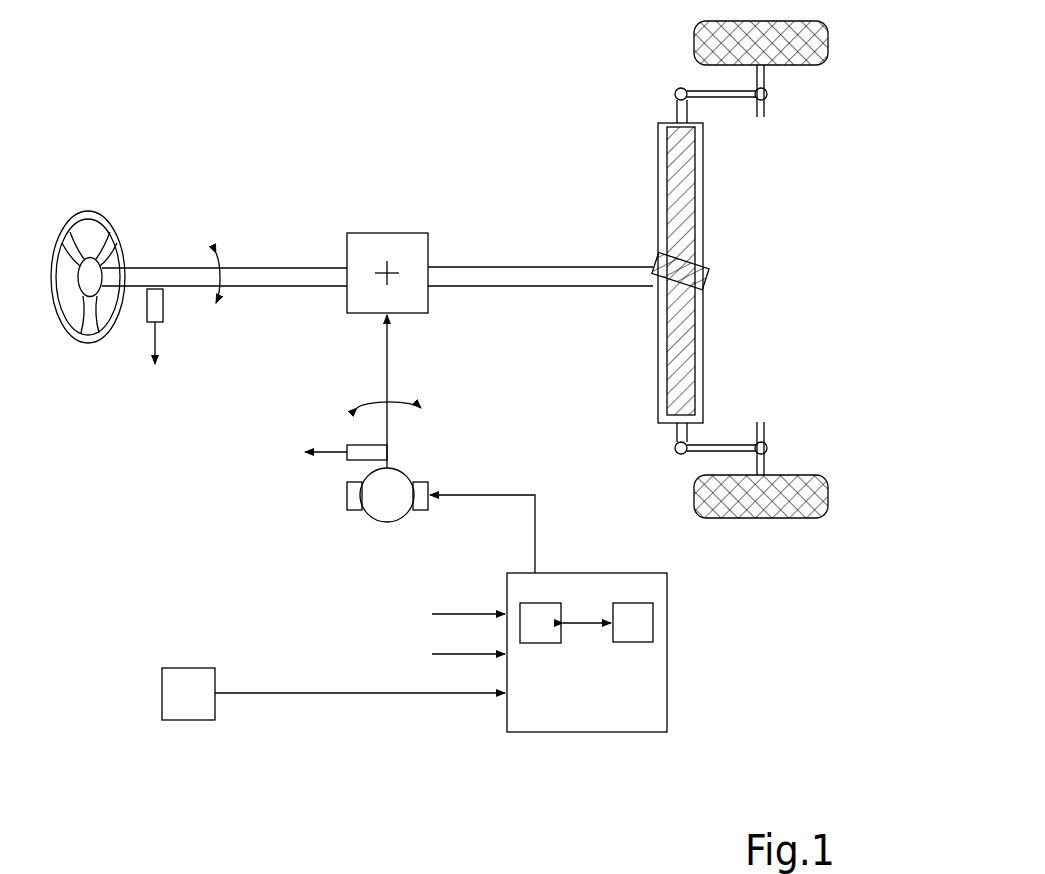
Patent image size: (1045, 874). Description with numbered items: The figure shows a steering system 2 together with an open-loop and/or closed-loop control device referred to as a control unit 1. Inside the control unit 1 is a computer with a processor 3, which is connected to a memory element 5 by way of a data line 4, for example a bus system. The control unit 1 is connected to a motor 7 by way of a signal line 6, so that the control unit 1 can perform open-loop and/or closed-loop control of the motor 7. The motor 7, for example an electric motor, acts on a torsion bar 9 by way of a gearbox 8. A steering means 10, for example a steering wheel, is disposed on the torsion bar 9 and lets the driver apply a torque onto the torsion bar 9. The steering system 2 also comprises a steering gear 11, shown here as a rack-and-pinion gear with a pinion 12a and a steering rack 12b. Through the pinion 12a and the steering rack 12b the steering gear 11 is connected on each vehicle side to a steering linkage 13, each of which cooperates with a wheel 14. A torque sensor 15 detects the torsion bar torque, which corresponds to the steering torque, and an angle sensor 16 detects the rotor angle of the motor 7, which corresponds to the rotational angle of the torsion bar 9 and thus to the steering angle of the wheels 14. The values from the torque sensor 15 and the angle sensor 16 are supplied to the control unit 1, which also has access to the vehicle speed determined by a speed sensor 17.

The control unit 1 is at (668, 672).
The steering system 2 is at (488, 134).
The processor 3 is at (653, 618).
The data line 4 is at (586, 622).
The memory element 5 is at (545, 643).
The signal line 6 is at (537, 522).
The motor 7 is at (385, 522).
The gearbox 8 is at (366, 248).
The torsion bar 9 is at (259, 272).
The steering means 10 is at (108, 222).
The steering gear 11 is at (636, 220).
The pinion 12a is at (650, 258).
The steering rack 12b is at (686, 352).
The steering linkage 13 is at (698, 92).
The wheel 14 is at (825, 42).
The torque sensor 15 is at (157, 308).
The angle sensor 16 is at (358, 448).
The speed sensor 17 is at (190, 665).